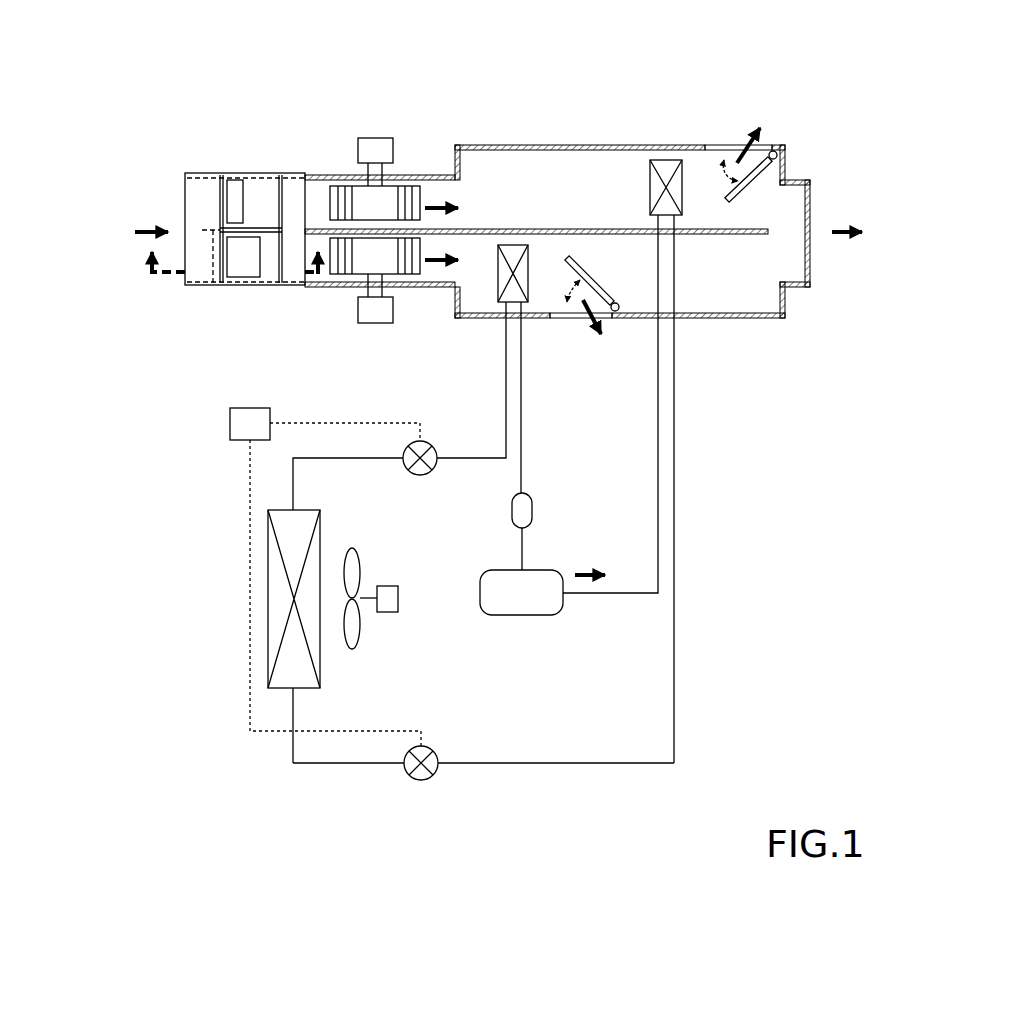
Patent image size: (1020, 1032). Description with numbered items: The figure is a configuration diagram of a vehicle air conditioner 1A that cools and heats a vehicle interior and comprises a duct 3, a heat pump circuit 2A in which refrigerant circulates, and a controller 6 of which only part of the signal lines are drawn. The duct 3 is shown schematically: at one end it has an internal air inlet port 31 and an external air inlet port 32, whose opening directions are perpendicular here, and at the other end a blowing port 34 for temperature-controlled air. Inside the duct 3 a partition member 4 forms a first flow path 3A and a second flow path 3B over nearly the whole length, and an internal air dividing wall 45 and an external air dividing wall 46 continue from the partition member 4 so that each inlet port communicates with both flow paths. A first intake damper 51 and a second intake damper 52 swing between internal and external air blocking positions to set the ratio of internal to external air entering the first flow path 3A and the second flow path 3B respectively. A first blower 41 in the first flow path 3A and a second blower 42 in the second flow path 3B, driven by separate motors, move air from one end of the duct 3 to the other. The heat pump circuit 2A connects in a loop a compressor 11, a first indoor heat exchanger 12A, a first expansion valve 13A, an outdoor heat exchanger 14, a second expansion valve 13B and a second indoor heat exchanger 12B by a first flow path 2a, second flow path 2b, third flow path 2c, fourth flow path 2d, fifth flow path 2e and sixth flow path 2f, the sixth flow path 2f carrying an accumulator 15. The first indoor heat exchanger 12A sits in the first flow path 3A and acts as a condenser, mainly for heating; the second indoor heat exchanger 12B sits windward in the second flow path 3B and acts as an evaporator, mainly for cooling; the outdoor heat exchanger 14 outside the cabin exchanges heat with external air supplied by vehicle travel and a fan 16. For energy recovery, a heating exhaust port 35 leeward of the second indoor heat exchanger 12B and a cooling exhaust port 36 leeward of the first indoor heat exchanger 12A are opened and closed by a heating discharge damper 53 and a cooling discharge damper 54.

The vehicle air conditioner 1A is at (172, 100).
The duct 3 is at (770, 318).
The first flow path 3A is at (490, 193).
The second flow path 3B is at (476, 291).
The partition member 4 is at (580, 228).
The internal air inlet port 31 is at (180, 186).
The external air inlet port 32 is at (265, 193).
The blowing port 34 is at (822, 214).
The heating exhaust port 35 is at (570, 320).
The cooling exhaust port 36 is at (727, 138).
The first blower 41 is at (383, 205).
The second blower 42 is at (362, 262).
The internal air dividing wall 45 is at (213, 283).
The external air dividing wall 46 is at (275, 240).
The first intake damper 51 is at (232, 178).
The second intake damper 52 is at (250, 265).
The heating discharge damper 53 is at (603, 303).
The cooling discharge damper 54 is at (777, 153).
The first indoor heat exchanger 12A is at (665, 160).
The second indoor heat exchanger 12B is at (508, 245).
The compressor 11 is at (520, 600).
The accumulator 15 is at (523, 510).
The outdoor heat exchanger 14 is at (266, 595).
The fan 16 is at (362, 630).
The first expansion valve 13A is at (421, 782).
The second expansion valve 13B is at (420, 477).
The controller 6 is at (247, 425).
The heat pump circuit 2A is at (637, 768).
The first flow path 2a is at (624, 597).
The second flow path 2b is at (676, 680).
The third flow path 2c is at (341, 766).
The fourth flow path 2d is at (291, 482).
The fifth flow path 2e is at (506, 405).
The sixth flow path 2f is at (523, 432).